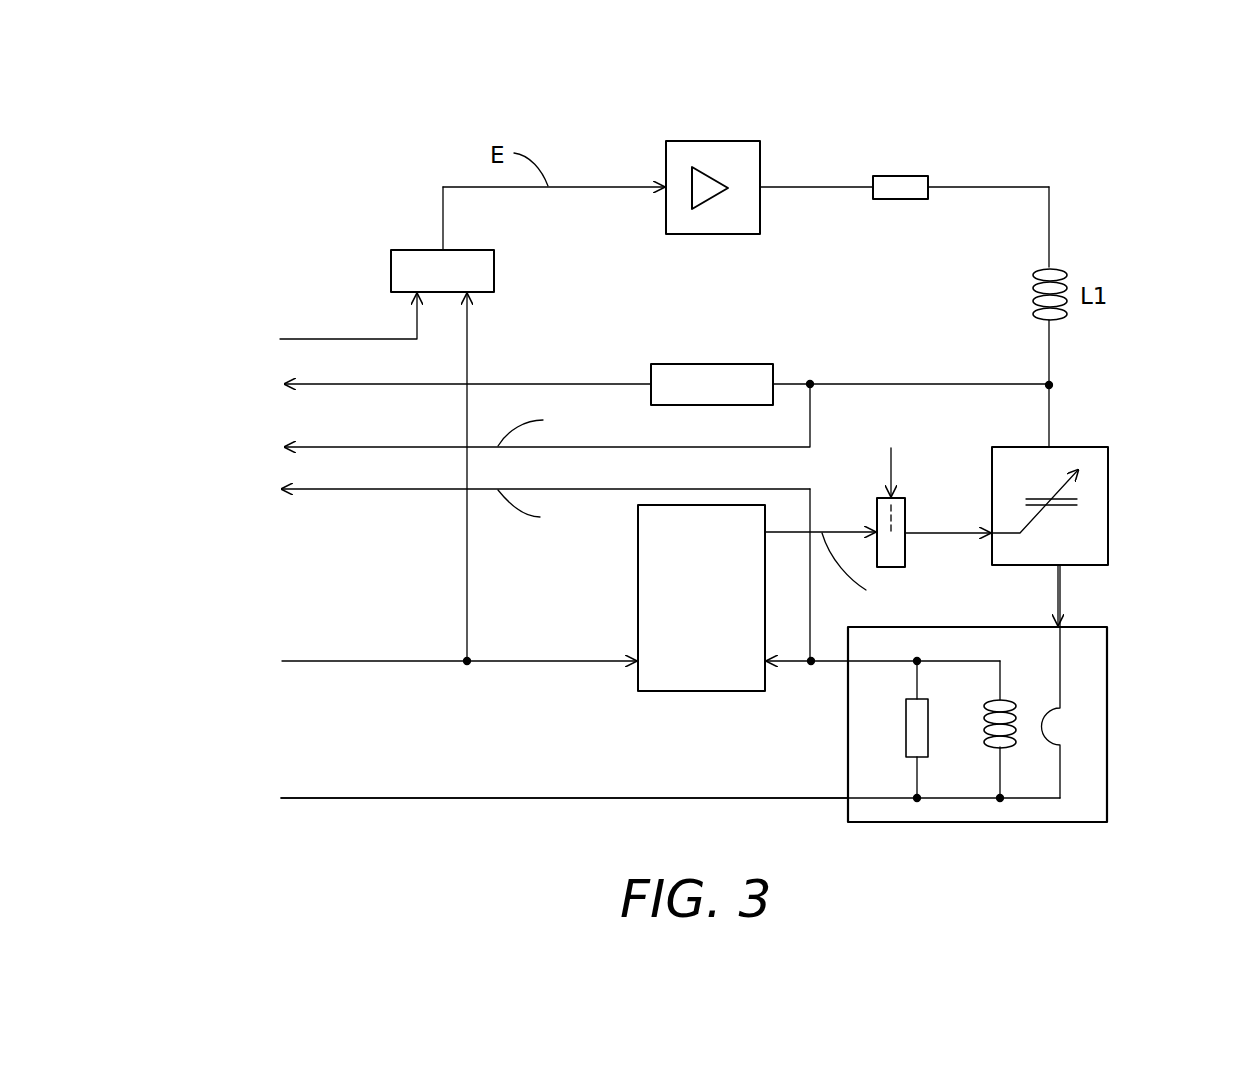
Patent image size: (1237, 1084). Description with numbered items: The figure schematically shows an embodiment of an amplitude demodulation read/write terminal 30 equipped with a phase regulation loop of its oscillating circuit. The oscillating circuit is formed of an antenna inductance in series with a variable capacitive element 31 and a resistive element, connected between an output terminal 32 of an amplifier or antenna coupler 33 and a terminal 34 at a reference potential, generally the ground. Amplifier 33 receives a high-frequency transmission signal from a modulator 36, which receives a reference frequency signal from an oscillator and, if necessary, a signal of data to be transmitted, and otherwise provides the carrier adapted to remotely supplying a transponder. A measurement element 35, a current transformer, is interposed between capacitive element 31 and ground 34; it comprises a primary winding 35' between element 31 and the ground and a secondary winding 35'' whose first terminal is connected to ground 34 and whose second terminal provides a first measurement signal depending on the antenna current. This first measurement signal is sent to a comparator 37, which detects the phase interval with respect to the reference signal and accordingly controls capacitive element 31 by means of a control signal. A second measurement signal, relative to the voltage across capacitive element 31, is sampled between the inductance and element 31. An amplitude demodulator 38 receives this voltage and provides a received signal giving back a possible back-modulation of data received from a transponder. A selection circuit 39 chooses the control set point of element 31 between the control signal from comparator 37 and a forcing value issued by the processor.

The terminal 30 is at (304, 214).
The capacitive element 31 is at (1085, 447).
The output terminal 32 is at (795, 187).
The amplifier 33 is at (666, 156).
The terminal at a reference potential 34 is at (573, 798).
The measurement element 35 is at (744, 724).
The primary winding 35' is at (1105, 681).
The secondary winding 35'' is at (1021, 693).
The modulator 36 is at (495, 258).
The comparator 37 is at (638, 622).
The amplitude demodulator 38 is at (745, 364).
The selection circuit 39 is at (877, 498).